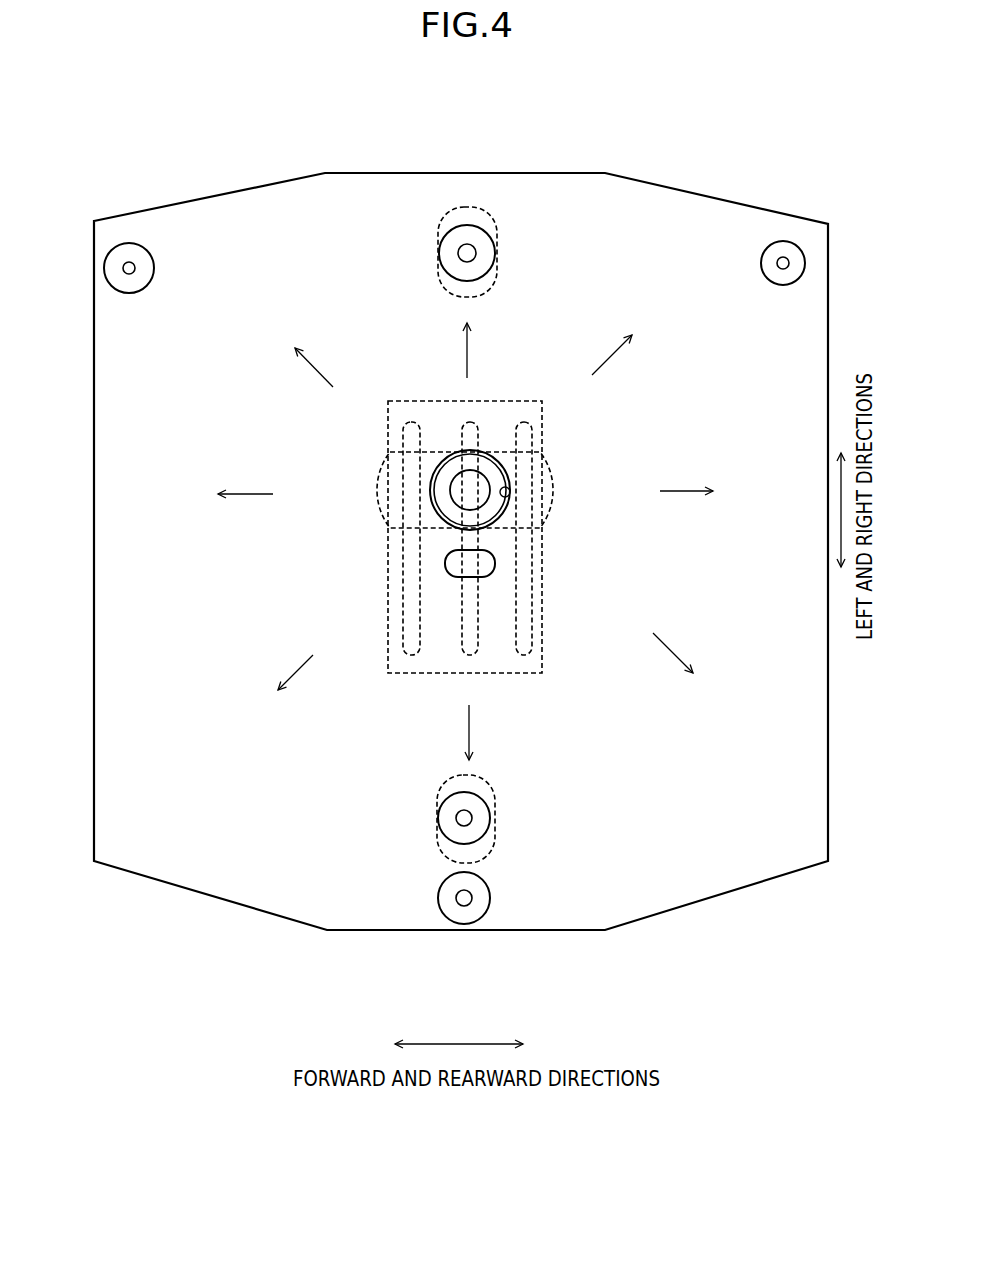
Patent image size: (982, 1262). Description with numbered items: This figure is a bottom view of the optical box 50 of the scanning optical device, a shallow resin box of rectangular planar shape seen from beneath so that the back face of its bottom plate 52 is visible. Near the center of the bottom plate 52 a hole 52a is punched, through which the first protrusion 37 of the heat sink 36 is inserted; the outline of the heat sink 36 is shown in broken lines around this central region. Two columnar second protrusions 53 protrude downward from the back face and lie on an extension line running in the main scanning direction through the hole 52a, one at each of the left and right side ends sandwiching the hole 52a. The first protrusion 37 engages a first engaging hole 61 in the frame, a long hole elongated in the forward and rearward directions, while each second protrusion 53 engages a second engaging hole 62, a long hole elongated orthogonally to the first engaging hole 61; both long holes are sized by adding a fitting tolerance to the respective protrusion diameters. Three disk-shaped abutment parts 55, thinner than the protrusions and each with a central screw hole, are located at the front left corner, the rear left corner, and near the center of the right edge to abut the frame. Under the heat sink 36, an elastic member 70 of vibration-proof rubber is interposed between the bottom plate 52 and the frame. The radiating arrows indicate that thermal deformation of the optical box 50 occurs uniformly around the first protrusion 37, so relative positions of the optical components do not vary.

The optical box 50 is at (461, 511).
The bottom plate 52 is at (342, 173).
The hole 52a is at (507, 487).
The second protrusion 53 is at (481, 248).
The abutment part 55 is at (110, 263).
The heat sink 36 is at (533, 600).
The first protrusion 37 is at (490, 468).
The first engaging hole 61 is at (377, 480).
The second engaging hole 62 is at (438, 273).
The elastic member 70 is at (447, 562).